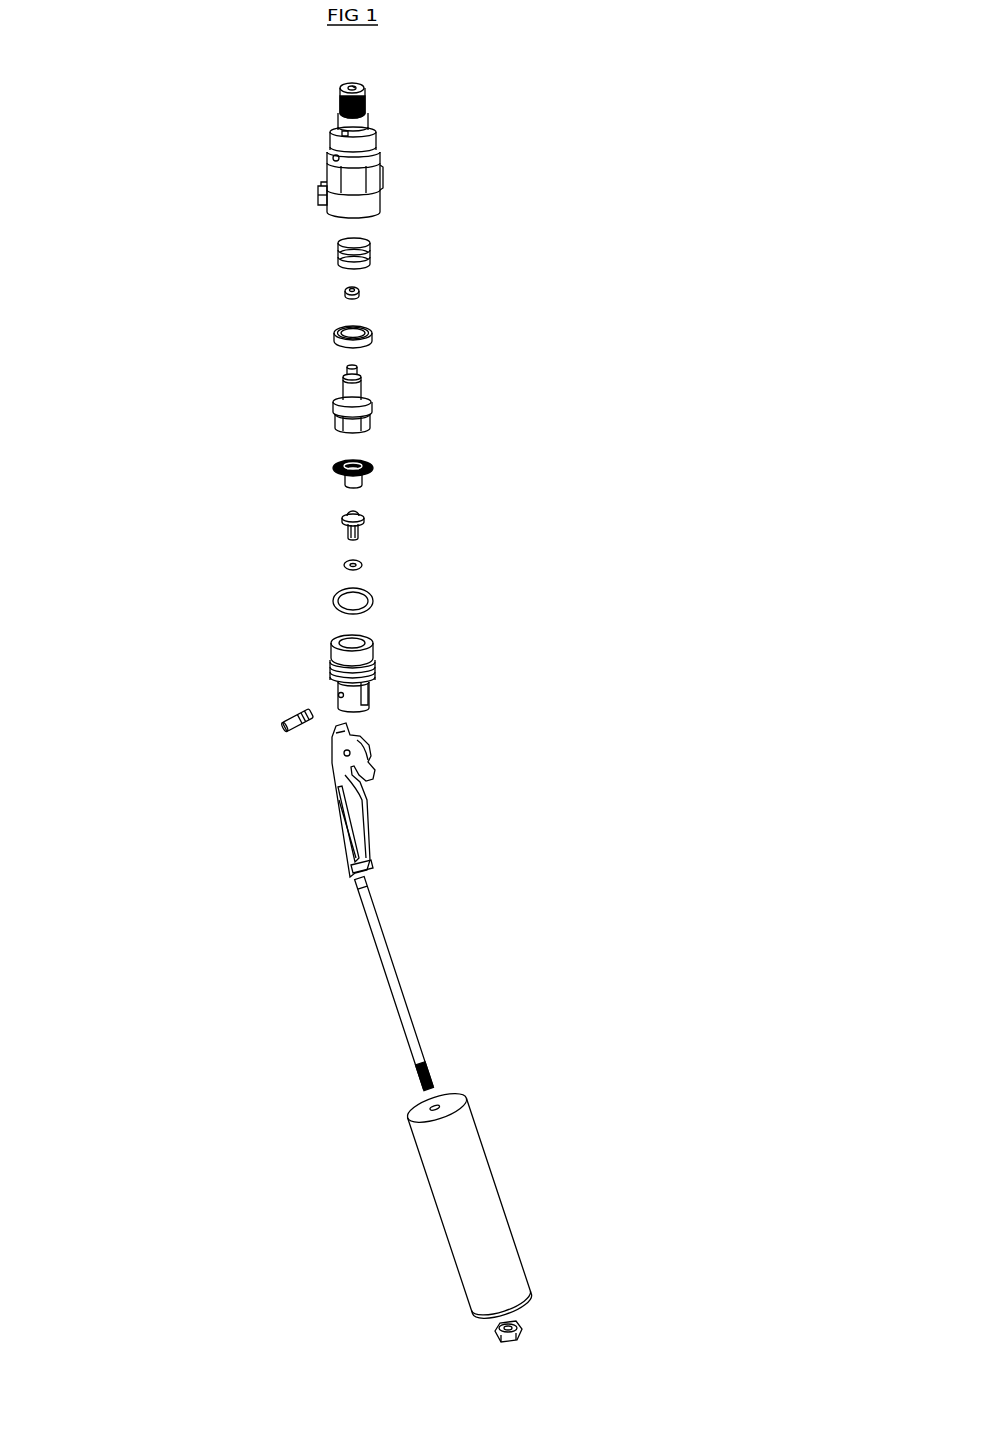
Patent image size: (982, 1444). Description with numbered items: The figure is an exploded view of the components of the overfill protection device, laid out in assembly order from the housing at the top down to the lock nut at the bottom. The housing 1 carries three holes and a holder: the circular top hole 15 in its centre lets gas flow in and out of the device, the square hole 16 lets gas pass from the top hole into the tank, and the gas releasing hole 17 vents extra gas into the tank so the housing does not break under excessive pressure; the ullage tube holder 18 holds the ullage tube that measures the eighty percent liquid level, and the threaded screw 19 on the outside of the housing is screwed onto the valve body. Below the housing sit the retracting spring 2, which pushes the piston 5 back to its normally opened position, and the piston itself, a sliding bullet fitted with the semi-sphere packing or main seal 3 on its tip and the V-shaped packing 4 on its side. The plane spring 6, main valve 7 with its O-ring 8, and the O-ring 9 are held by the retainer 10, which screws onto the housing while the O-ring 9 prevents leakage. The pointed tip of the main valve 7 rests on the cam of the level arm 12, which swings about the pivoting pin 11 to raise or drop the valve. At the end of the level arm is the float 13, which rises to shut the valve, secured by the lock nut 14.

The housing 1 is at (383, 163).
The retracting spring 2 is at (372, 254).
The semi-sphere packing or main seal 3 is at (362, 296).
The V-shaped packing 4 is at (374, 336).
The piston 5 is at (374, 407).
The plane spring 6 is at (377, 474).
The main valve 7 is at (366, 522).
The O-ring (main valve) 8 is at (365, 566).
The O-ring 9 is at (375, 603).
The retainer 10 is at (378, 650).
The pivoting pin 11 is at (282, 724).
The level arm 12 is at (376, 746).
The float 13 is at (425, 1178).
The lock nut 14 is at (495, 1334).
The top hole 15 is at (345, 84).
The square hole 16 is at (335, 133).
The gas releasing hole 17 is at (333, 156).
The ullage tube holder 18 is at (322, 190).
The threaded screw 19 is at (368, 100).